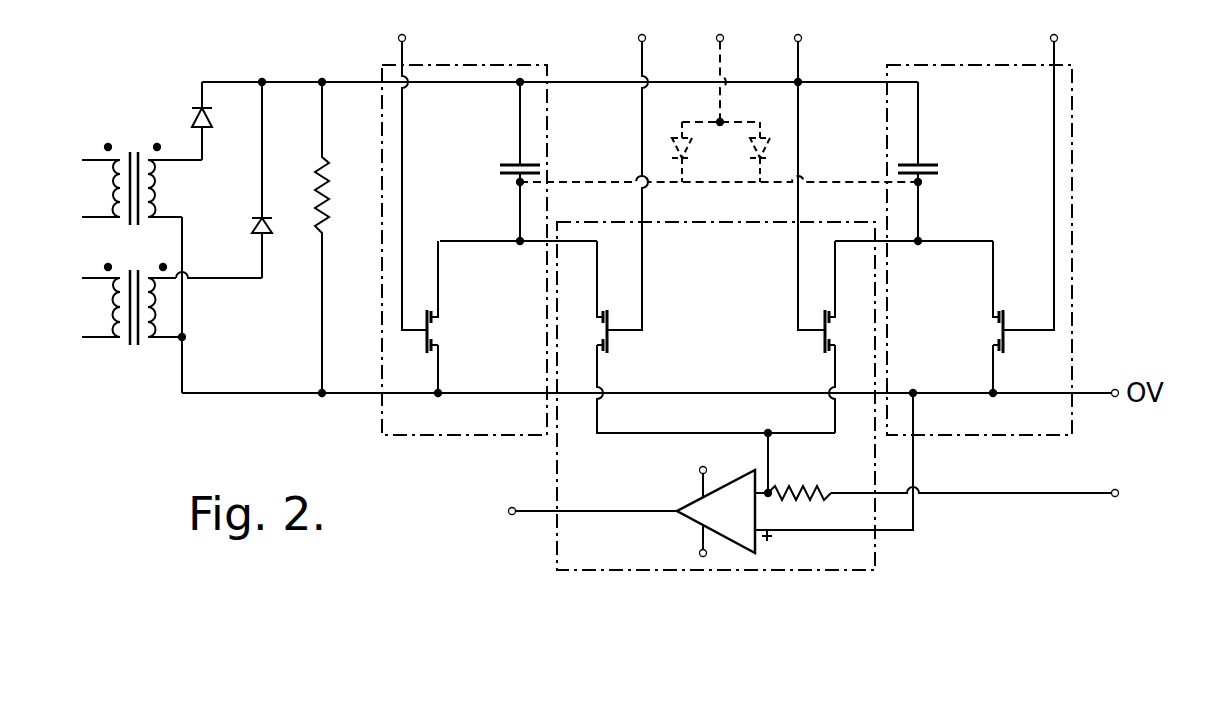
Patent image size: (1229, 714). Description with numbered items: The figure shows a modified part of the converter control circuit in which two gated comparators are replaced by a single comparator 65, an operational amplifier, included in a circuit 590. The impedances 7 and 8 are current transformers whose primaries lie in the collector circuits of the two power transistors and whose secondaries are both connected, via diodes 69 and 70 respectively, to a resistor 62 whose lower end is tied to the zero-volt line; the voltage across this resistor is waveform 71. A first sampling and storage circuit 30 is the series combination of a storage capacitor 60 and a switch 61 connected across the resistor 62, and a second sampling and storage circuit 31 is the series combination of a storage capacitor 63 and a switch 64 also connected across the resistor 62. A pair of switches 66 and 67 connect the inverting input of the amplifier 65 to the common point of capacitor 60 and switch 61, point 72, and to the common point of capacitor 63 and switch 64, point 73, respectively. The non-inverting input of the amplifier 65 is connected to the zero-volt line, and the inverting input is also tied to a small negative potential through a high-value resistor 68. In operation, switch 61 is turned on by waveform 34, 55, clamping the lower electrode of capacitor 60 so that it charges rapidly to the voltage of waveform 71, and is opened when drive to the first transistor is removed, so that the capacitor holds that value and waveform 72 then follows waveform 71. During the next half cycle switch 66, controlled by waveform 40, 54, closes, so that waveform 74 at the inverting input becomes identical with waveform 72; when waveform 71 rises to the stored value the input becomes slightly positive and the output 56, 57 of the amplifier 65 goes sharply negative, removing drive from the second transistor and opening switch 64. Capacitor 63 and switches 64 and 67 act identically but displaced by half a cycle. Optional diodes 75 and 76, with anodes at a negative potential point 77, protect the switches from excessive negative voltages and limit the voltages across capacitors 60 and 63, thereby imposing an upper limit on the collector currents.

The impedance 7 is at (134, 152).
The impedance 8 is at (130, 345).
The diode 69 is at (197, 107).
The diode 70 is at (256, 222).
The waveform 71 is at (290, 80).
The resistor 62 is at (326, 195).
The waveform 34 is at (398, 38).
The sampling and storage circuit 30 is at (528, 65).
The storage capacitor 60 is at (516, 163).
The waveform 72 is at (518, 196).
The waveform 54 is at (638, 38).
The negative potential point 77 is at (716, 38).
The diode 75 is at (678, 136).
The diode 76 is at (764, 136).
The waveform 55 is at (802, 38).
The storage capacitor 63 is at (922, 163).
The point 73 is at (920, 190).
The sampling and storage circuit 31 is at (1076, 148).
The waveform 40 is at (1058, 38).
The switch 61 is at (440, 331).
The switch 66 is at (610, 340).
The switch 67 is at (822, 345).
The switch 64 is at (1005, 345).
The waveform 74 is at (770, 458).
The comparator 65 is at (778, 479).
The high-value resistor 68 is at (822, 495).
The circuit 590 is at (878, 558).
The output 56 is at (548, 546).
The output 57 is at (510, 514).